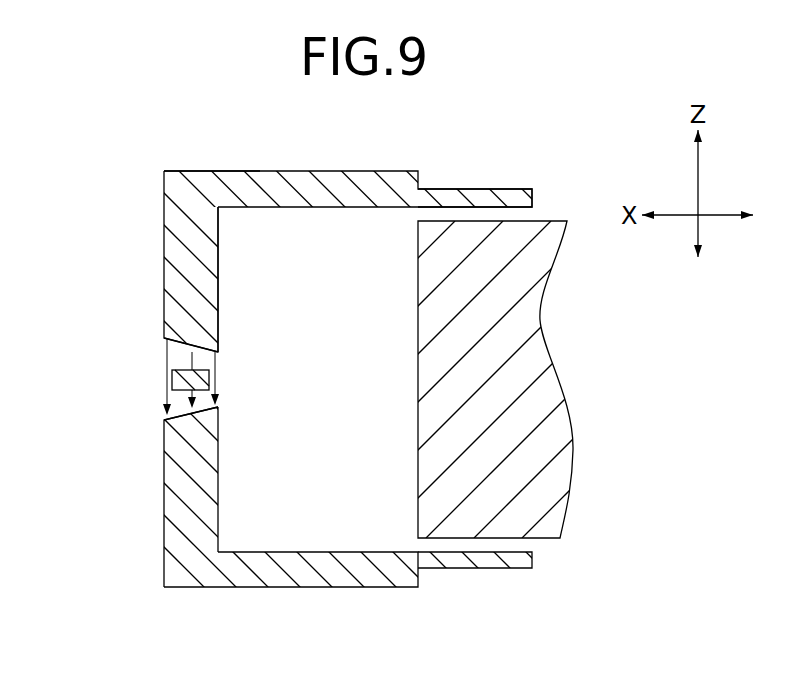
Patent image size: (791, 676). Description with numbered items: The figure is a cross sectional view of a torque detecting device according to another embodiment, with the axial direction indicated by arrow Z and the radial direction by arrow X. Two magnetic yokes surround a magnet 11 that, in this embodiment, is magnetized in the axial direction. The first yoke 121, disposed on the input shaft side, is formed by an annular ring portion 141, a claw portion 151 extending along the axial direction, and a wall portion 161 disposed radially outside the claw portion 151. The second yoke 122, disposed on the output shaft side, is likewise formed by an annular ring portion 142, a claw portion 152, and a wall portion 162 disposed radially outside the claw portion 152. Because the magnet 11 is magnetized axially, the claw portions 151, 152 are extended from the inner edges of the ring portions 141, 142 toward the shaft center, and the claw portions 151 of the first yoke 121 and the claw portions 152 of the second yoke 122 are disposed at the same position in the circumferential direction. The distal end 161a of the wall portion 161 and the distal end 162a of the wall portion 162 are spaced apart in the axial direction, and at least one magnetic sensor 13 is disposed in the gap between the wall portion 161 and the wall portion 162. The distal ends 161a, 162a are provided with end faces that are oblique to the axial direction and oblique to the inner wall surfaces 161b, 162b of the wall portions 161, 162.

The magnet 11 is at (533, 260).
The magnetic sensor 13 is at (172, 383).
The first yoke 121 is at (227, 171).
The second yoke 122 is at (322, 580).
The ring portion 141 is at (324, 177).
The ring portion 142 is at (381, 583).
The claw portion 151 is at (503, 195).
The claw portion 152 is at (492, 567).
The wall portion 161 is at (165, 248).
The distal end 161a is at (176, 343).
The inner wall surface 161b is at (218, 292).
The wall portion 162 is at (175, 563).
The distal end 162a is at (167, 414).
The inner wall surface 162b is at (218, 480).